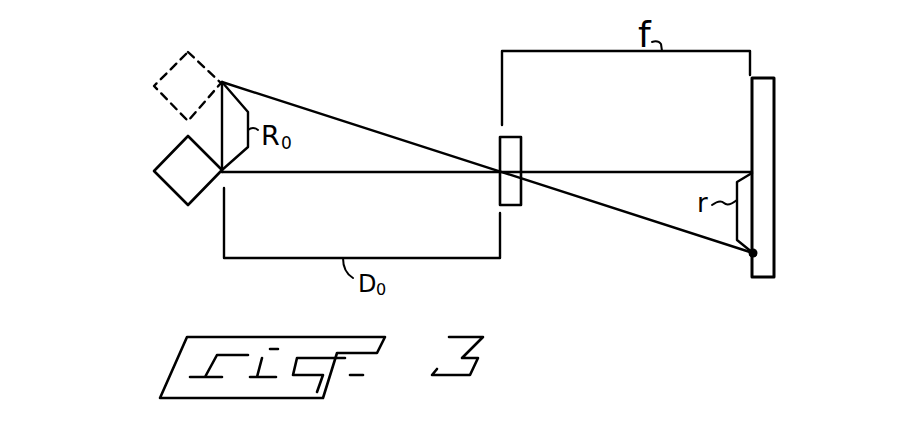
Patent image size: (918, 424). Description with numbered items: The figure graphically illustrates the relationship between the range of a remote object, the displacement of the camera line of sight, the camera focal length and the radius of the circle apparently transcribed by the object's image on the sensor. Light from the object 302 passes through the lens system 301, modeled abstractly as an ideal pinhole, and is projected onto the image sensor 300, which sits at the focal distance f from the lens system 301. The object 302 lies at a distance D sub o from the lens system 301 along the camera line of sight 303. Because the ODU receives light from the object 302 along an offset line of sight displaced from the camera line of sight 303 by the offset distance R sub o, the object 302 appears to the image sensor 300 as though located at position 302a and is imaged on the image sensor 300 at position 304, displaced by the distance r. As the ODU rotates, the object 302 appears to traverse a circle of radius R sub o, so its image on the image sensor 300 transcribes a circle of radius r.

The image sensor 300 is at (760, 277).
The lens system 301 is at (510, 137).
The object 302 is at (192, 204).
The apparent object position 302a is at (167, 100).
The camera line of sight 303 is at (640, 173).
The image position 304 is at (745, 256).